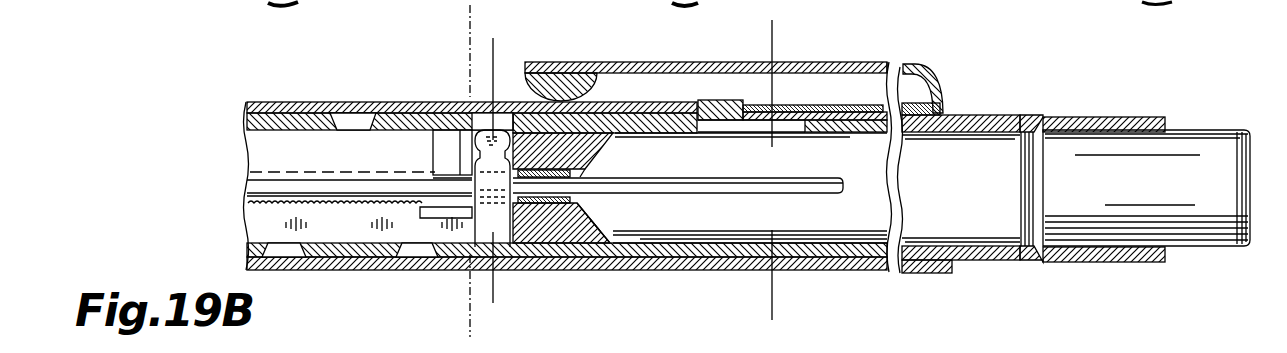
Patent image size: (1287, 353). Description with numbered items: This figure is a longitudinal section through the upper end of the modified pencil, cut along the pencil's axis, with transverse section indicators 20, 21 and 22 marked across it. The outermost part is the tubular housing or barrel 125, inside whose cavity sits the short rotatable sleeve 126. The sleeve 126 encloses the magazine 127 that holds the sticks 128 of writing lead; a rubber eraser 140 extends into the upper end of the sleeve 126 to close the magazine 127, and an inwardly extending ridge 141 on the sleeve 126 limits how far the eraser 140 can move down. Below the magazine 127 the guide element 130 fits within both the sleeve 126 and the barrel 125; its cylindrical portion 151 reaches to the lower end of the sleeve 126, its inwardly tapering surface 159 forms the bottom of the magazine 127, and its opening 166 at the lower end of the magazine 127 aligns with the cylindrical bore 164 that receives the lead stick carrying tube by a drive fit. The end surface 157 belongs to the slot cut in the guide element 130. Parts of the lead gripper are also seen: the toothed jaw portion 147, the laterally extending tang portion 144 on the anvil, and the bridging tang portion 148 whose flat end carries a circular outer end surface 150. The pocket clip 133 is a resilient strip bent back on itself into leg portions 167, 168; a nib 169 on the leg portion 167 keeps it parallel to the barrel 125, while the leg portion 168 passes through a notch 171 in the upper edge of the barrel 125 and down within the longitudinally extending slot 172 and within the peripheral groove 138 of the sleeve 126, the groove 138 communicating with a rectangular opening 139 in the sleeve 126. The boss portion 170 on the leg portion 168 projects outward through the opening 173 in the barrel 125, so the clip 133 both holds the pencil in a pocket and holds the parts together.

The section line 20- 20 is at (805, 305).
The section line 21- 21 is at (533, 292).
The section line 22- 22 is at (507, 318).
The outer tubular housing or barrel 125 is at (278, 101).
The tubular element or sleeve 126 is at (1062, 116).
The magazine 127 is at (863, 227).
The sticks of writing lead 128 is at (733, 183).
The guide element 130 is at (573, 229).
The pocket clip 133 is at (828, 60).
The peripheral groove 138 is at (930, 270).
The rectangular opening 139 is at (790, 128).
The rubber eraser 140 is at (1225, 105).
The inwardly extending ridge 141 is at (1022, 158).
The laterally extending tang portion 144 is at (443, 143).
The toothed jaw portion 147 is at (347, 236).
The bridging tang portion 148 is at (470, 158).
The circular outer end surface 150 is at (495, 132).
The cylindrical portion 151 is at (572, 238).
The end surface 157 is at (600, 148).
The inwardly tapering surface 159 is at (602, 230).
The cylindrical bore 164 is at (590, 176).
The opening 166 is at (575, 199).
The leg portion 167 is at (652, 62).
The leg portion 168 is at (817, 116).
The nib 169 is at (578, 82).
The boss portion 170 is at (712, 100).
The notch 171 is at (949, 110).
The longitudinally extending slot 172 is at (893, 64).
The opening 173 is at (698, 107).